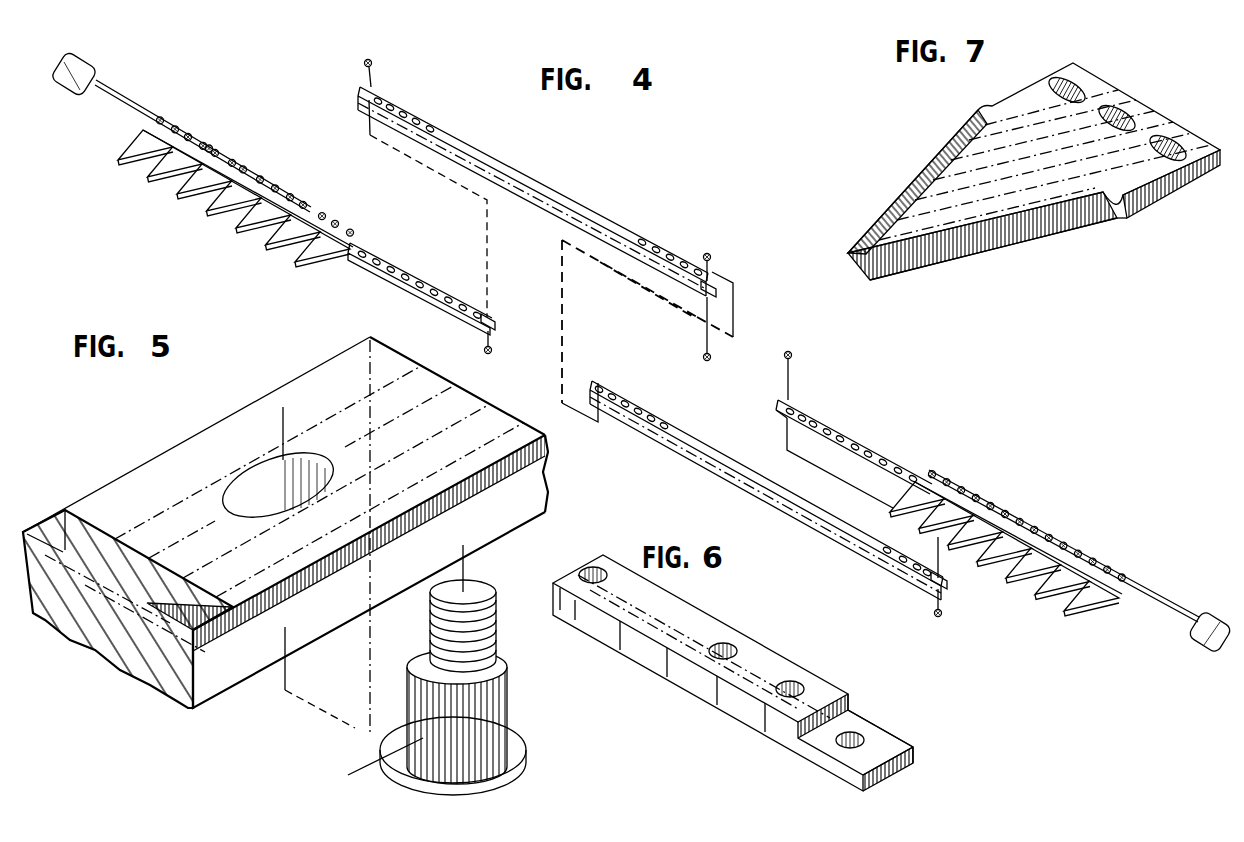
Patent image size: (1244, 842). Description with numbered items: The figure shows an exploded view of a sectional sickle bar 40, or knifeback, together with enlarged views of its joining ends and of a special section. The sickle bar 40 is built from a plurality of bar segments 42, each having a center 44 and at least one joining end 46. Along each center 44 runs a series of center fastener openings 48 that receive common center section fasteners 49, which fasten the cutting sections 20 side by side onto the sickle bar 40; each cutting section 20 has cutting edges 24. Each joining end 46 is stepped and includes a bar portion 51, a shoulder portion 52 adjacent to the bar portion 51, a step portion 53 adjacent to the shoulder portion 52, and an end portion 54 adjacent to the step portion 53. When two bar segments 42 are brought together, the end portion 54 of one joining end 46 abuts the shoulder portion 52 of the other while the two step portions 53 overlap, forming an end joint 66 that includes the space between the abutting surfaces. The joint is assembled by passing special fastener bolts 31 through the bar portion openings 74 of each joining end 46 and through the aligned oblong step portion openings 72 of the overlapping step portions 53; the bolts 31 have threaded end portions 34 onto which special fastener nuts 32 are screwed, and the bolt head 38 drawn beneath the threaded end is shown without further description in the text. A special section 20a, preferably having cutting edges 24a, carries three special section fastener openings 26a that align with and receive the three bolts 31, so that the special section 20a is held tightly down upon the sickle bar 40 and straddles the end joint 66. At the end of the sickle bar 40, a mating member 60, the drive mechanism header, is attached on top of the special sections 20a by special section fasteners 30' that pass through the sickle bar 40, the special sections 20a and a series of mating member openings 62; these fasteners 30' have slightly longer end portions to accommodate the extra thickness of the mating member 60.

In FIG. 4, the cutting section 20 is at (305, 263).
In FIG. 4, the special section 20a is at (262, 238).
In FIG. 7, the special section 20a is at (1200, 47).
In FIG. 4, the cutting edges 24 is at (893, 495).
In FIG. 4, the cutting edges 24a is at (1063, 603).
In FIG. 7, the cutting edges 24a is at (1037, 232).
In FIG. 4, the special section fastener openings 26a is at (318, 215).
In FIG. 7, the special section fastener openings 26a is at (1043, 85).
In FIG. 4, the special section fasteners 30' is at (227, 147).
In FIG. 4, the special fastener bolts 31 is at (483, 348).
In FIG. 5, the special fastener bolts 31 is at (510, 705).
In FIG. 4, the special fastener nuts 32 is at (375, 63).
In FIG. 5, the end portions 34 is at (500, 633).
In FIG. 5, the bolt head 38 is at (415, 738).
In FIG. 4, the sickle bar 40 is at (382, 247).
In FIG. 4, the bar segment 42 is at (433, 282).
In FIG. 4, the center 44 is at (513, 167).
In FIG. 4, the joining end 46 is at (496, 314).
In FIG. 5, the joining end 46 is at (329, 373).
In FIG. 6, the joining end 46 is at (786, 751).
In FIG. 4, the center fastener openings 48 is at (414, 269).
In FIG. 6, the center fastener openings 48 is at (753, 612).
In FIG. 4, the center section fasteners 49 is at (337, 228).
In FIG. 5, the bar portion 51 is at (52, 536).
In FIG. 6, the bar portion 51 is at (838, 681).
In FIG. 5, the shoulder portion 52 is at (480, 530).
In FIG. 6, the shoulder portion 52 is at (850, 707).
In FIG. 5, the step portion 53 is at (172, 522).
In FIG. 6, the step portion 53 is at (888, 749).
In FIG. 5, the end portion 54 is at (171, 585).
In FIG. 6, the end portion 54 is at (899, 778).
In FIG. 4, the mating member 60 is at (107, 80).
In FIG. 4, the mating member openings 62 is at (212, 139).
In FIG. 5, the end joint 66 is at (287, 632).
In FIG. 4, the step portion openings 72 is at (384, 89).
In FIG. 5, the step portion openings 72 is at (259, 466).
In FIG. 6, the step portion openings 72 is at (861, 739).
In FIG. 4, the bar portion openings 74 is at (386, 100).
In FIG. 6, the bar portion openings 74 is at (797, 683).